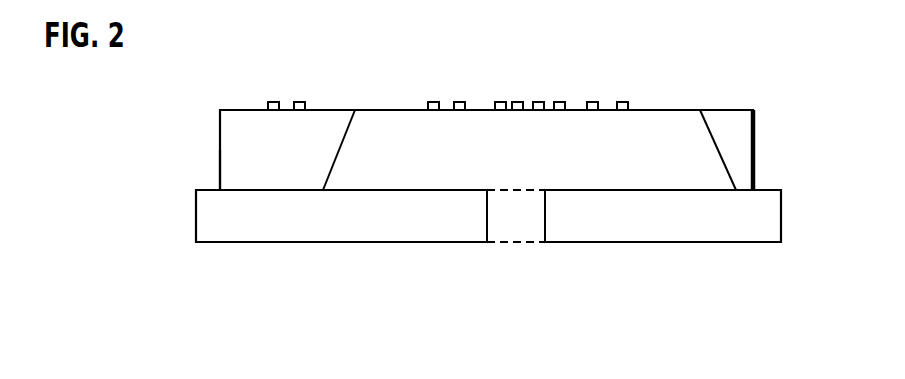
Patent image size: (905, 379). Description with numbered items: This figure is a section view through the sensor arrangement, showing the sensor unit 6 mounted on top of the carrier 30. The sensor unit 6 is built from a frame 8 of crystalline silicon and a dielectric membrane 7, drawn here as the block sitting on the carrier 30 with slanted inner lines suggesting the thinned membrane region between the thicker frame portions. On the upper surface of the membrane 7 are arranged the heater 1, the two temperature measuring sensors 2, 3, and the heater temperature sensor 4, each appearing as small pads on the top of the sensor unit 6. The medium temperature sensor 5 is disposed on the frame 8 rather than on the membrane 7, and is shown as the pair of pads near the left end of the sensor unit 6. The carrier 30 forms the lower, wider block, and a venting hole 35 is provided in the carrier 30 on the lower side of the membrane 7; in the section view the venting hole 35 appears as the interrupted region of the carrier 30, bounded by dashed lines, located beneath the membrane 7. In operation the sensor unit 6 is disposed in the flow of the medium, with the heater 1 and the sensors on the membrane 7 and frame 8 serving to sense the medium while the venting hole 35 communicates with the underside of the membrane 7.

The heater 1 is at (500, 102).
The temperature measuring sensor 2 is at (433, 102).
The temperature measuring sensor 3 is at (622, 102).
The heater temperature sensor 4 is at (538, 102).
The medium temperature sensor 5 is at (301, 102).
The sensor unit 6 is at (207, 157).
The dielectric membrane 7 is at (664, 108).
The frame 8 is at (238, 128).
The carrier 30 is at (739, 233).
The venting hole 35 is at (512, 232).